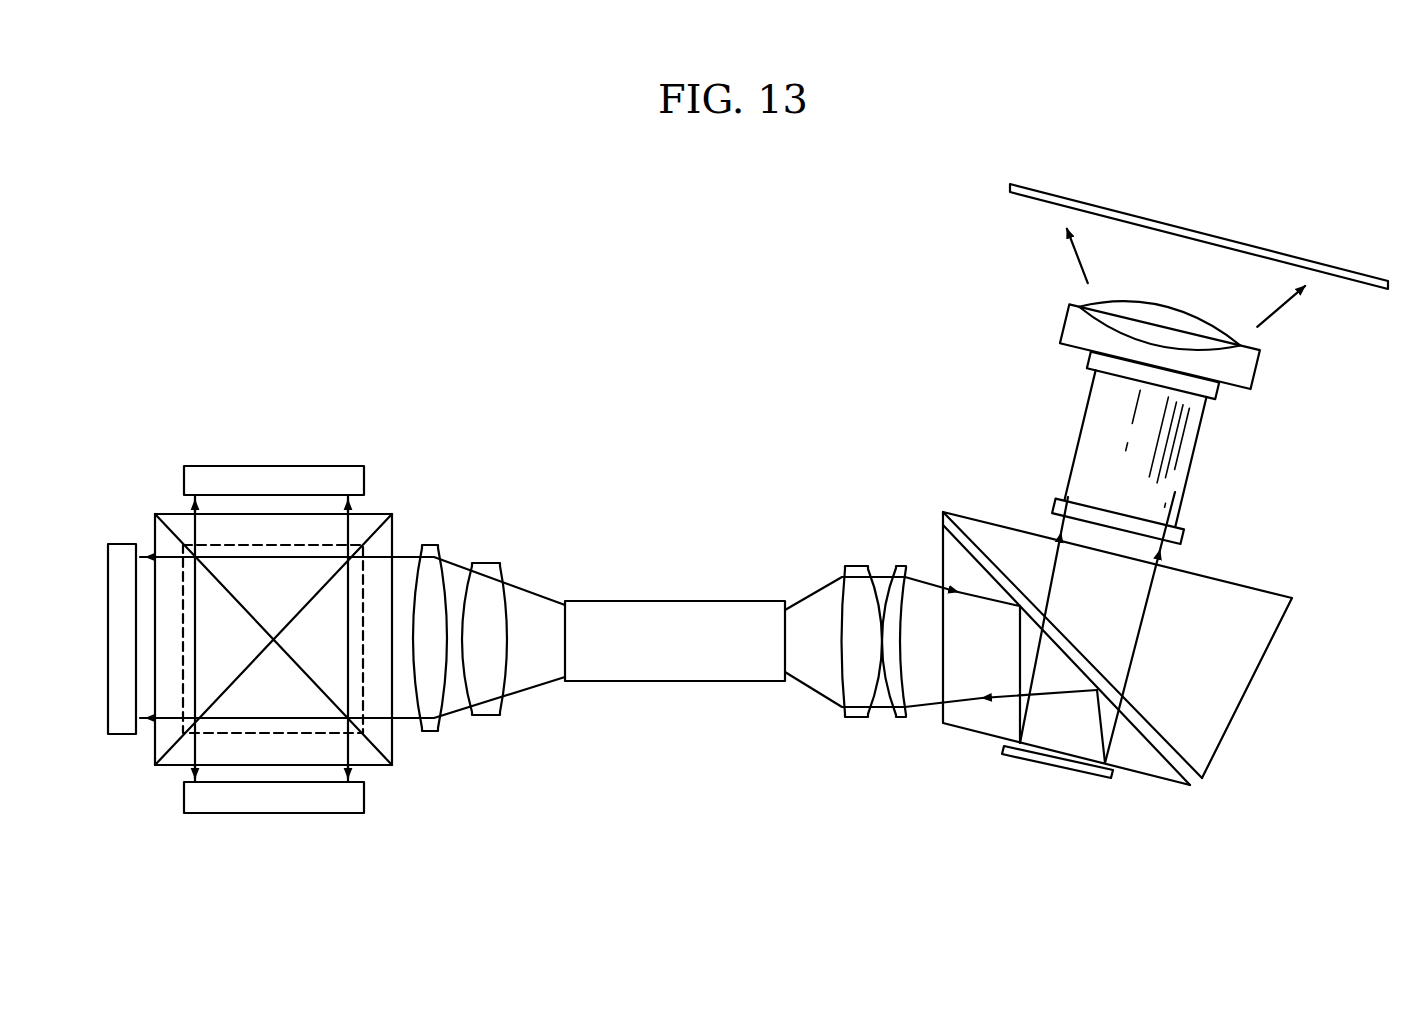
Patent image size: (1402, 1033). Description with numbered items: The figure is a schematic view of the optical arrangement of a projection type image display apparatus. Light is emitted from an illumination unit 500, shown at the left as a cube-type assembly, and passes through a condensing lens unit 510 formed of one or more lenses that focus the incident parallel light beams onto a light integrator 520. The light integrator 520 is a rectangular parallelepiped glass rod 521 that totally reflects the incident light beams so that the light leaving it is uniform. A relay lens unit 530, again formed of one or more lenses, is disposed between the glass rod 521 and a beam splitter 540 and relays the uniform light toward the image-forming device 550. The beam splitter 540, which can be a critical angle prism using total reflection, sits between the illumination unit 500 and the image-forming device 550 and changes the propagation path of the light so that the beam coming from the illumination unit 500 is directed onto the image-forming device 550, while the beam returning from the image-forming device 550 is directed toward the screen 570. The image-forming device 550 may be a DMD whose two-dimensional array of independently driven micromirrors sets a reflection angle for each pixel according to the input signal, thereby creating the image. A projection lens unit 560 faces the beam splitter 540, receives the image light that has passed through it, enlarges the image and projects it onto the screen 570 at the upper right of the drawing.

The illumination unit 500 is at (152, 464).
The condensing lens unit 510 is at (481, 531).
The light integrator 520 is at (638, 599).
The glass rod 521 is at (725, 620).
The relay lens unit 530 is at (868, 546).
The beam splitter 540 is at (1285, 644).
The image-forming device 550 is at (1070, 767).
The projection lens unit 560 is at (1270, 385).
The screen 570 is at (1347, 265).